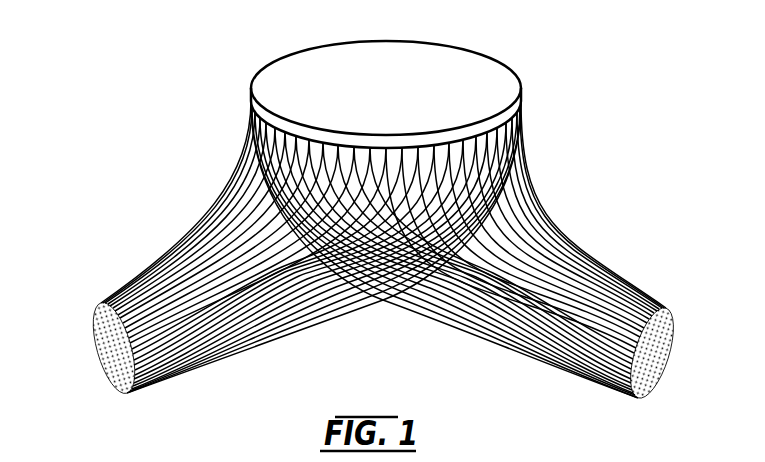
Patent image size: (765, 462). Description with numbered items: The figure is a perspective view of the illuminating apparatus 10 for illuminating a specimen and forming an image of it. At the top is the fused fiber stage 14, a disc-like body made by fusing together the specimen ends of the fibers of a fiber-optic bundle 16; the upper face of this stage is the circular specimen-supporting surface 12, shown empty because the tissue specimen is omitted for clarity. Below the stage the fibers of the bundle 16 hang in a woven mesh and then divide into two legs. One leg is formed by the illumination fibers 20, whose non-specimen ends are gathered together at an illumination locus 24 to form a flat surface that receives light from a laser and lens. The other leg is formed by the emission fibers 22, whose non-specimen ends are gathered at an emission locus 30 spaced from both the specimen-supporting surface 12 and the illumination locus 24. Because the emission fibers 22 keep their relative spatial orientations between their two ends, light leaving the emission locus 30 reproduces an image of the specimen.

The illuminating apparatus 10 is at (378, 215).
The specimen-supporting surface 12 is at (280, 61).
The fused fiber stage 14 is at (507, 104).
The fiber-optic bundle 16 is at (379, 312).
The illumination fibers 20 is at (177, 263).
The emission fibers 22 is at (557, 256).
The illumination locus 24 is at (103, 343).
The emission locus 30 is at (641, 354).